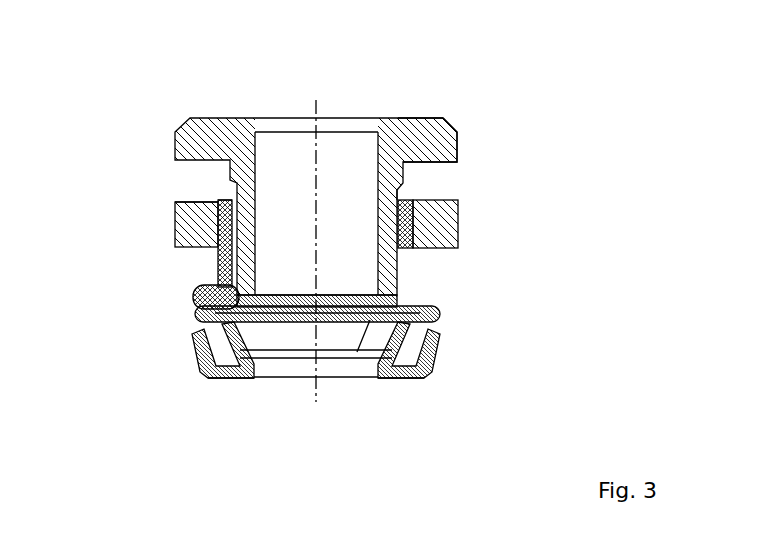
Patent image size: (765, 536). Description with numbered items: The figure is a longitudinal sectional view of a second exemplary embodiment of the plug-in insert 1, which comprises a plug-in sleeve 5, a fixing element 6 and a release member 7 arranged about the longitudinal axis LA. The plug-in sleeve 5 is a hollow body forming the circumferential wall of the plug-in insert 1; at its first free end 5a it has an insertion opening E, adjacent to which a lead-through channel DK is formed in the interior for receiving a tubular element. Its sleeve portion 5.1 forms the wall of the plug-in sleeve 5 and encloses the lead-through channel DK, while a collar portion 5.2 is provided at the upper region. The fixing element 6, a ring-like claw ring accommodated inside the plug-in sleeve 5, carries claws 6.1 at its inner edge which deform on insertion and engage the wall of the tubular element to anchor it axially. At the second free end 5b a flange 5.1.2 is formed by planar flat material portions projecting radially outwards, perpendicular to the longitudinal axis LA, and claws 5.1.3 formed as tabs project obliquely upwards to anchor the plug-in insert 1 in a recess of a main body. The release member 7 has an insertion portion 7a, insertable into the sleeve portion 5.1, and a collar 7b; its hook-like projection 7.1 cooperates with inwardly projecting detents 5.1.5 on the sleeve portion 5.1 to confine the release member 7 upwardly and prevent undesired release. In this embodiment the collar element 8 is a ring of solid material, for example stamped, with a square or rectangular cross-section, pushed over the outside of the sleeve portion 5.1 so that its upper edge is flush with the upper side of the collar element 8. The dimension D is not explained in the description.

The plug-in insert 1 is at (448, 83).
The lead-through channel DK is at (282, 121).
The release member 7 is at (470, 140).
The collar 7b is at (447, 120).
The insertion portion 7a is at (217, 230).
The hook-like projection 7.1 is at (218, 252).
The fixing element 6 is at (305, 297).
The claws 6.1 is at (378, 318).
The collar element 8 is at (176, 220).
The plug-in sleeve 5 is at (142, 210).
The first free end 5a is at (202, 191).
The second free end 5b is at (398, 390).
The sleeve portion 5.1 is at (462, 316).
The flange 5.1.2 is at (196, 377).
The claws 5.1.3 is at (194, 340).
The detents 5.1.5 is at (412, 249).
The collar portion 5.2 is at (484, 233).
The insertion opening E is at (413, 192).
The diameter D is at (245, 386).
The longitudinal axis LA is at (314, 398).